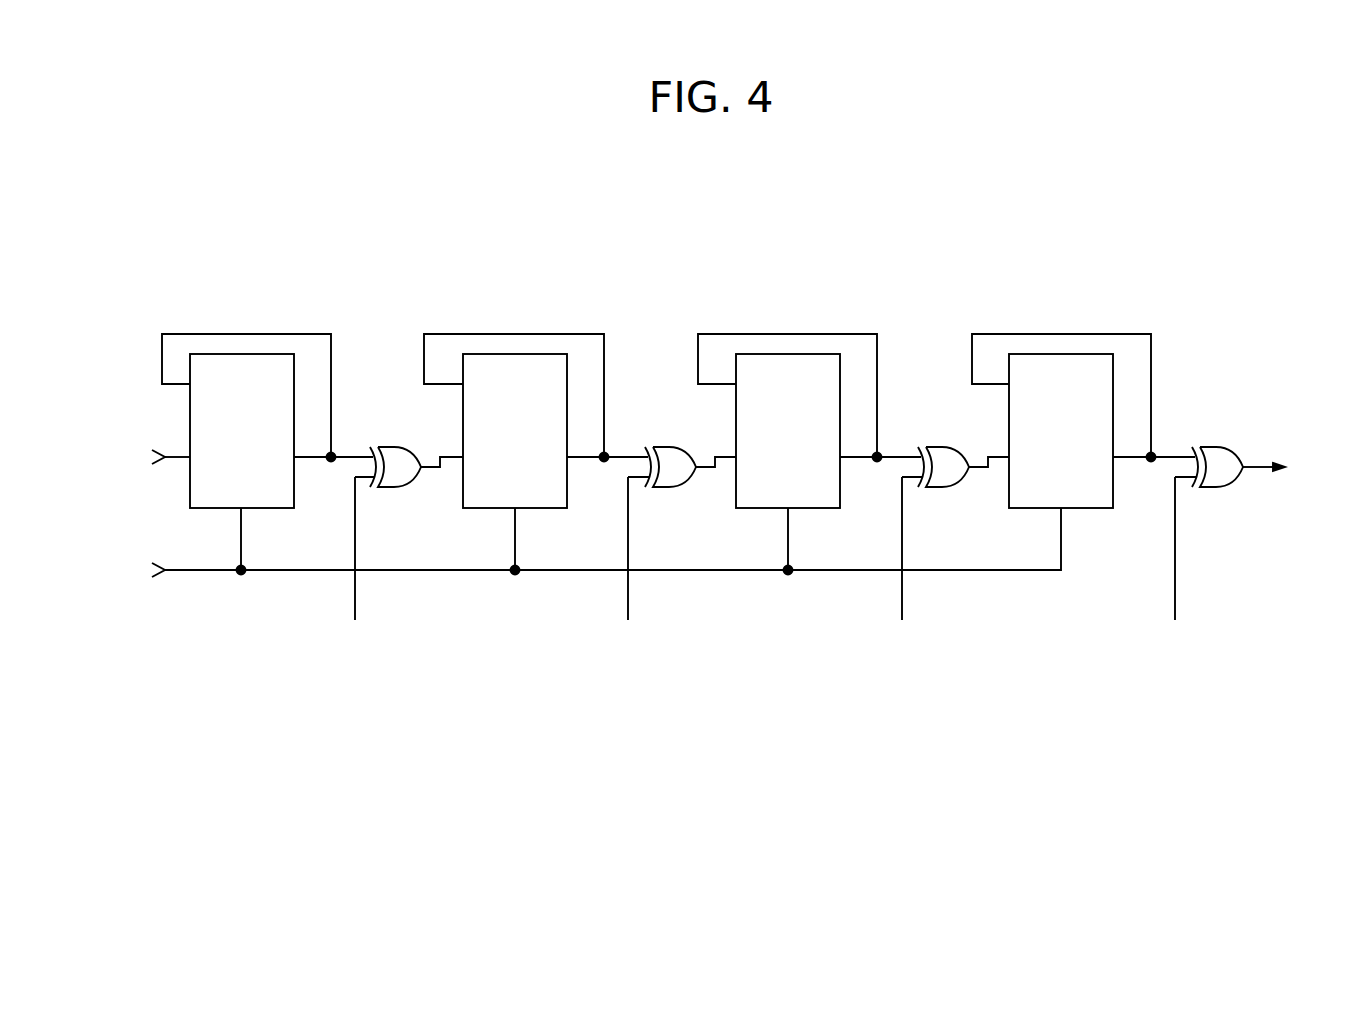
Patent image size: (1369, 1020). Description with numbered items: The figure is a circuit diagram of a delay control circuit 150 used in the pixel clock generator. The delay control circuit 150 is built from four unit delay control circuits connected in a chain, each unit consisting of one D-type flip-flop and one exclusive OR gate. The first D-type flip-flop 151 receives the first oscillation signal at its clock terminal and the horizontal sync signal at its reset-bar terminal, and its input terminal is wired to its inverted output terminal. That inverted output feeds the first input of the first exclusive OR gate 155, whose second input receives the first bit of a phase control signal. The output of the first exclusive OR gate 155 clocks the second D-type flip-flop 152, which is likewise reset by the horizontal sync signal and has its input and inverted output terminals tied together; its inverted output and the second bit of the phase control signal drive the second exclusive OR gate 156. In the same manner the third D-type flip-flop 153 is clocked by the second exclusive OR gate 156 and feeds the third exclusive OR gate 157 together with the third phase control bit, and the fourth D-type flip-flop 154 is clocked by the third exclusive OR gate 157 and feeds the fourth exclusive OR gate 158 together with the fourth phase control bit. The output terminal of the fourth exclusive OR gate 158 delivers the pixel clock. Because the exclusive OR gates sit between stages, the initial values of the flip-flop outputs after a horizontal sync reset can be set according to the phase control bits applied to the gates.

The delay control circuit 150 is at (710, 254).
The first D-type flip-flop 151 is at (242, 353).
The second D-type flip-flop 152 is at (515, 353).
The third D-type flip-flop 153 is at (788, 353).
The fourth D-type flip-flop 154 is at (1061, 353).
The first exclusive OR gate 155 is at (395, 446).
The second exclusive OR gate 156 is at (668, 446).
The third exclusive OR gate 157 is at (941, 446).
The fourth exclusive OR gate 158 is at (1214, 446).